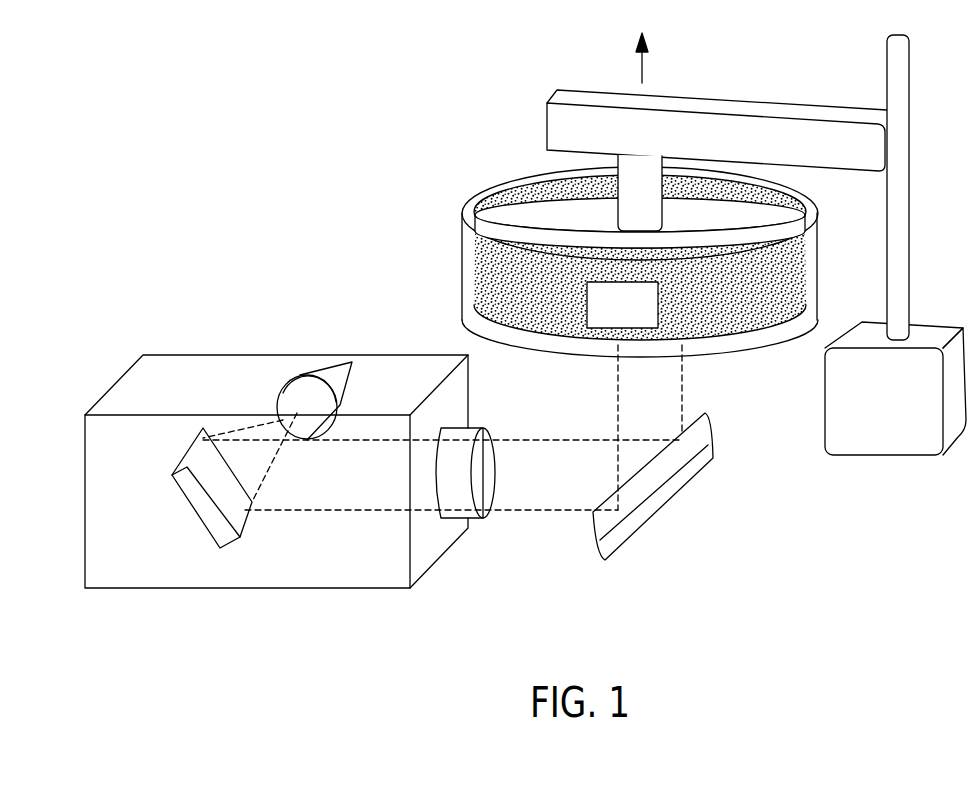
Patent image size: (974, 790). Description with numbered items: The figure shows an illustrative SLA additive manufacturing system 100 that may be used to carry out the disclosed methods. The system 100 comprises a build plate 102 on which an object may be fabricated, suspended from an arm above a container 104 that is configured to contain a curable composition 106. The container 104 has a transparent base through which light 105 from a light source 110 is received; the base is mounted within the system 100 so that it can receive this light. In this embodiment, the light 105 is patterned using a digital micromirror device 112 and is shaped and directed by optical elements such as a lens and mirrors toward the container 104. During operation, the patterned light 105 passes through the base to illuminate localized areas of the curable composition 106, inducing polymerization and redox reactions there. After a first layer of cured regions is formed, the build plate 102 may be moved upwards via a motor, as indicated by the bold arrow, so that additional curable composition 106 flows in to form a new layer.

The SLA system 100 is at (228, 81).
The build plate 102 is at (558, 218).
The container 104 is at (462, 228).
The light 105 is at (545, 512).
The curable composition 106 is at (645, 316).
The light source 110 is at (296, 378).
The digital micromirror device 112 is at (187, 505).